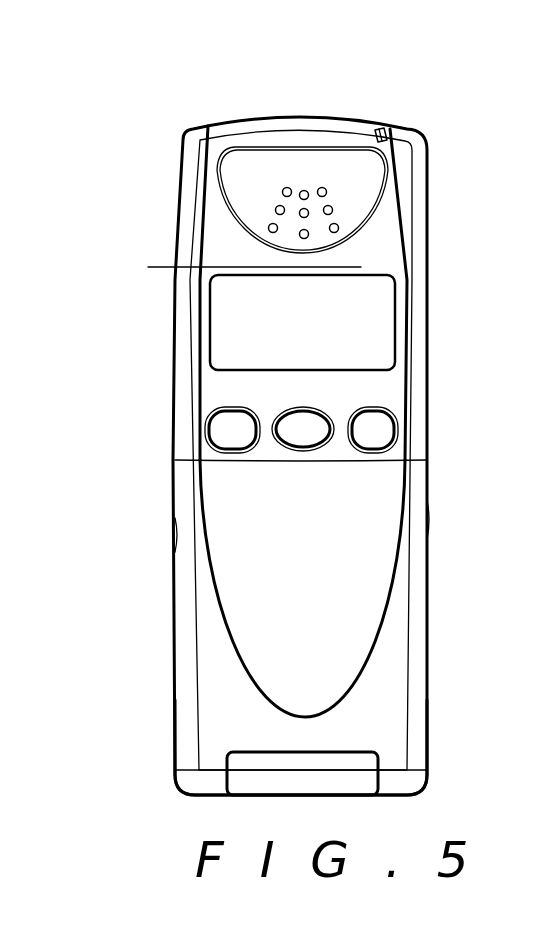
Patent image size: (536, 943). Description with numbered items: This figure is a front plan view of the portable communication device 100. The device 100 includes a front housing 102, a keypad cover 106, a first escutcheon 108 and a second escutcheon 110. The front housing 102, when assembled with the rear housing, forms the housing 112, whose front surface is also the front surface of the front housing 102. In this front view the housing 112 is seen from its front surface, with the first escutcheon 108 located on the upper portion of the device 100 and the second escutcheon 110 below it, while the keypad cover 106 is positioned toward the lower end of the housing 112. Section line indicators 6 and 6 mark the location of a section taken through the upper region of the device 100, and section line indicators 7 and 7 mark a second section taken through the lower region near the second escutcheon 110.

The portable communication device 100 is at (228, 46).
The front housing 102 is at (183, 152).
The keypad cover 106 is at (395, 682).
The first escutcheon 108 is at (385, 265).
The second escutcheon 110 is at (365, 538).
The housing 112 is at (408, 127).
The section line 6 is at (361, 157).
The section line 7 is at (303, 452).